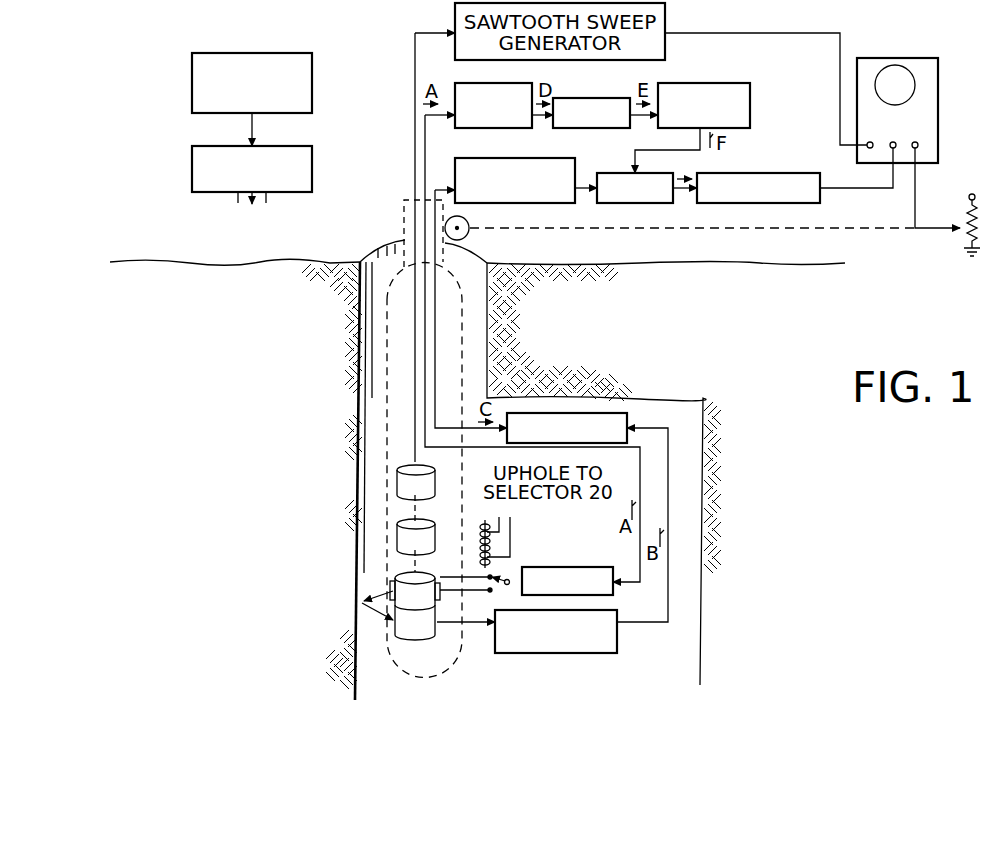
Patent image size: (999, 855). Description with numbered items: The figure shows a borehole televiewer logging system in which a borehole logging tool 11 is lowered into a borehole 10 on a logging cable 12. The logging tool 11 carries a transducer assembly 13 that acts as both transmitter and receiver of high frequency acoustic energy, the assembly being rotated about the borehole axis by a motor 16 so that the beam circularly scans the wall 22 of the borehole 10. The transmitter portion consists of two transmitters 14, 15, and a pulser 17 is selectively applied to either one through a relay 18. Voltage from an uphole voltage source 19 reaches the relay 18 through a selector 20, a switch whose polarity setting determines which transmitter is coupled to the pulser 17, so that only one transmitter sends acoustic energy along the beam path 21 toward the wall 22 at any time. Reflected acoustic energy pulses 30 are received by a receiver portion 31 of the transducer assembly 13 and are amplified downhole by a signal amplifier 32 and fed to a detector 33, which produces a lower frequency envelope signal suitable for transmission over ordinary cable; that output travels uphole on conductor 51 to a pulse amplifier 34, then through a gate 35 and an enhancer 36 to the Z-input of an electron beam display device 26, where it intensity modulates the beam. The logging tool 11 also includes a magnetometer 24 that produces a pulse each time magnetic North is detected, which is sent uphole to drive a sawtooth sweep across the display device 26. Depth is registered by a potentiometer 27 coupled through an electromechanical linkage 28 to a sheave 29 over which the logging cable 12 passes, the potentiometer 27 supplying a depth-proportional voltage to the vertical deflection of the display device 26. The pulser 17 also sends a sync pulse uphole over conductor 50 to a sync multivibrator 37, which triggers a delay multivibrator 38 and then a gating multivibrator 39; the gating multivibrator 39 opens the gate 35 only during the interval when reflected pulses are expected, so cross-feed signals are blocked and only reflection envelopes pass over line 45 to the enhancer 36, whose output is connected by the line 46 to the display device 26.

The borehole 10 is at (472, 275).
The borehole logging tool 11 is at (465, 343).
The logging cable 12 is at (404, 224).
The transducer assembly 13 is at (427, 577).
The transmitter 14 is at (391, 582).
The transmitter 15 is at (437, 598).
The motor 16 is at (427, 524).
The pulser 17 is at (585, 567).
The relay 18 is at (483, 519).
The voltage source 19 is at (275, 53).
The selector 20 is at (275, 146).
The beam path 21 is at (386, 597).
The wall 22 is at (361, 519).
The magnetometer 24 is at (437, 477).
The electron beam display device 26 is at (897, 58).
The potentiometer 27 is at (960, 234).
The electromechanical linkage 28 is at (545, 230).
The sheave 29 is at (468, 236).
The reflected acoustic energy pulses 30 is at (369, 615).
The receiver portion 31 is at (413, 637).
The signal amplifier 32 is at (585, 653).
The detector 33 is at (626, 414).
The pulse amplifier 34 is at (530, 158).
The gate 35 is at (637, 173).
The enhancer 36 is at (785, 173).
The sync multivibrator 37 is at (494, 83).
The delay multivibrator 38 is at (590, 98).
The gating multivibrator 39 is at (715, 83).
The line 45 is at (688, 193).
The enhancer output line 46 is at (848, 190).
The conductor 50 is at (425, 405).
The conductor 51 is at (437, 368).